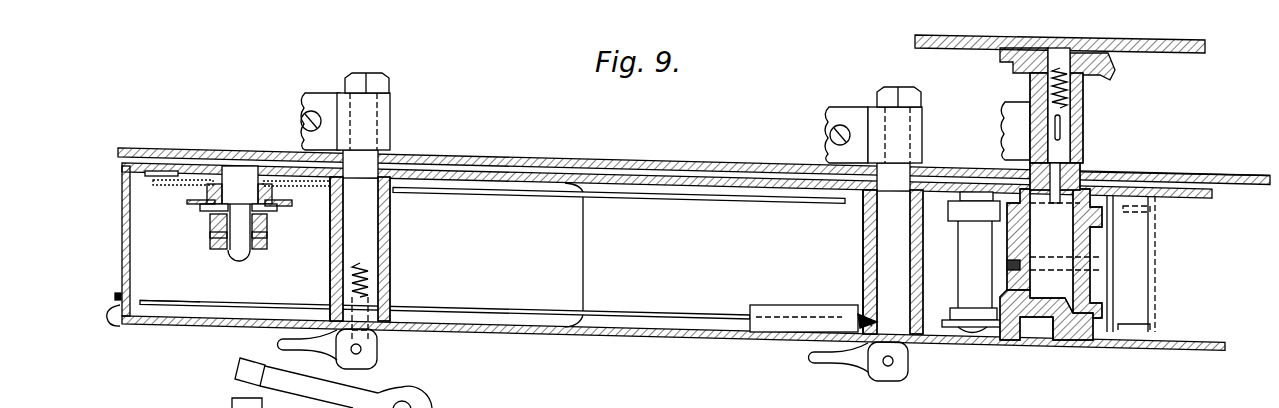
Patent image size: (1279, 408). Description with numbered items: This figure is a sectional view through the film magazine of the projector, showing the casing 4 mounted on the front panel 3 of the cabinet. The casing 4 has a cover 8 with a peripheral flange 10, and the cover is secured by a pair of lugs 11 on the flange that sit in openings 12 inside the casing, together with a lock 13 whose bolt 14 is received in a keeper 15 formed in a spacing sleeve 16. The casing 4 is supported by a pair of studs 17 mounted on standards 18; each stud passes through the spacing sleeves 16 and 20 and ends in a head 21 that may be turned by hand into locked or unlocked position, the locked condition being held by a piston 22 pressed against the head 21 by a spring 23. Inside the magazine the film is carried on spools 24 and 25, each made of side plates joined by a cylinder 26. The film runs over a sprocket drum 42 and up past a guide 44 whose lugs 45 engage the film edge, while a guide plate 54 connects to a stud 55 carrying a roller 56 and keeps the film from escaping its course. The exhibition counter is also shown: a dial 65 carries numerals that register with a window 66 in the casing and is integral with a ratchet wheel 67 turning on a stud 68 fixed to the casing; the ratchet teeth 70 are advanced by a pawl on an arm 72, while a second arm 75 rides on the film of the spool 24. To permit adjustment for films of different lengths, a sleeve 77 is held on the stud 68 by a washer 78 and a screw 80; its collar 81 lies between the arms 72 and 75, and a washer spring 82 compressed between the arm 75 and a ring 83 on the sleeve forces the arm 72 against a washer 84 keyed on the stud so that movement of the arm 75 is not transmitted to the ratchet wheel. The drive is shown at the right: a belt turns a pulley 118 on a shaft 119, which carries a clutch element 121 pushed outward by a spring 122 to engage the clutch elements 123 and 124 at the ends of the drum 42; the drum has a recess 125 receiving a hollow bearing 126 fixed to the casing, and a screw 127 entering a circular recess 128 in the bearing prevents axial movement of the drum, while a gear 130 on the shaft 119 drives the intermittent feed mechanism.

The front panel 3 is at (566, 159).
The casing 4 is at (122, 244).
The cover 8 is at (163, 324).
The peripheral flange 10 is at (113, 323).
The lugs 11 is at (130, 304).
The openings 12 is at (125, 300).
The lock 13 is at (764, 324).
The bolt 14 is at (862, 313).
The keeper 15 is at (872, 324).
The spacing sleeve 16 is at (863, 238).
The studs 17 is at (626, 242).
The standards 18 is at (386, 117).
The spacing sleeve 20 is at (333, 262).
The heads 21 is at (284, 345).
The pistons 22 is at (372, 328).
The springs 23 is at (372, 278).
The spool 24 is at (700, 200).
The spool 25 is at (617, 320).
The cylinder 26 is at (568, 242).
The sprocket drum 42 is at (1100, 236).
The guide 44 is at (1135, 266).
The lugs 45 is at (1152, 209).
The guide plate 54 is at (990, 328).
The stud 55 is at (974, 190).
The roller 56 is at (972, 266).
The dial 65 is at (196, 181).
The window 66 is at (167, 178).
The ratchet wheel 67 is at (196, 210).
The stud 68 is at (240, 185).
The teeth 70 is at (188, 202).
The arm 72 is at (266, 208).
The arm 75 is at (268, 235).
The sleeve 77 is at (222, 255).
The washer 78 is at (251, 258).
The screw 80 is at (238, 262).
The collar 81 is at (212, 230).
The washer spring 82 is at (214, 244).
The ring 83 is at (262, 246).
The washer 84 is at (282, 205).
The pulley 118 is at (1105, 72).
The shaft 119 is at (1003, 62).
The clutch element 121 is at (1068, 172).
The spring 122 is at (1064, 92).
The clutch element 123 is at (1085, 180).
The clutch element 124 is at (1062, 338).
The recess 125 is at (1094, 336).
The hollow bearing 126 is at (1080, 246).
The screw 127 is at (1010, 263).
The circular recess 128 is at (1085, 262).
The gear 130 is at (1206, 46).